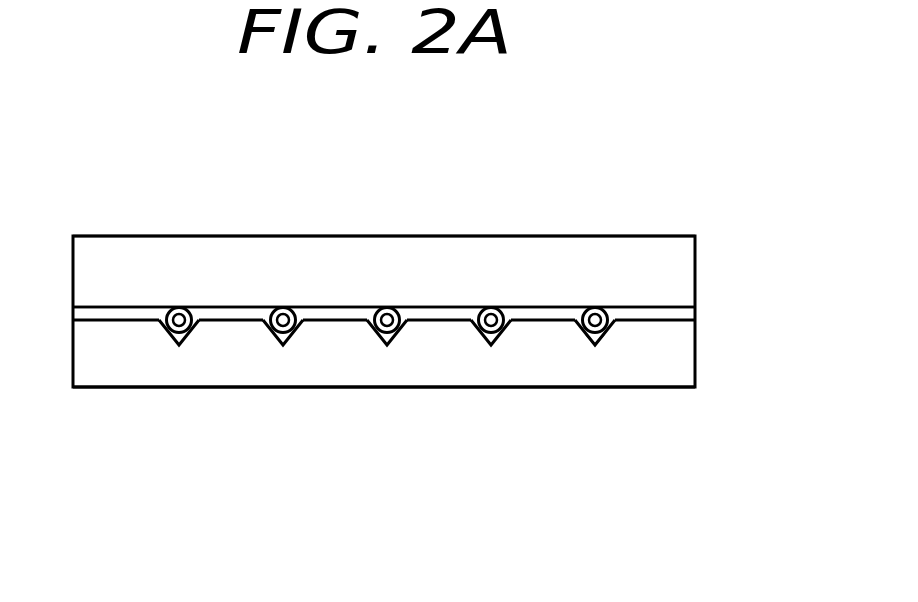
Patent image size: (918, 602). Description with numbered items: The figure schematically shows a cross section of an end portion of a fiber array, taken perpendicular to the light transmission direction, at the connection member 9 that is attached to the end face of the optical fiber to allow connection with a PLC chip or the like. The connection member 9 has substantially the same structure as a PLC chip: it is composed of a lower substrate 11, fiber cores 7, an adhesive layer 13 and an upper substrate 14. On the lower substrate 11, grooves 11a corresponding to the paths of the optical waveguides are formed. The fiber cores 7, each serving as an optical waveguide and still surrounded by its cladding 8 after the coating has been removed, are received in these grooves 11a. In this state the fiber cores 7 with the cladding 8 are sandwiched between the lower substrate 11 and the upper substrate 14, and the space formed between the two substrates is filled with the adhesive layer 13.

The connection member 9 is at (631, 207).
The upper substrate 14 is at (210, 250).
The adhesive layer 13 is at (548, 308).
The lower substrate 11 is at (548, 367).
The grooves 11a is at (177, 345).
The fiber core 7 is at (388, 345).
The cladding 8 is at (593, 340).